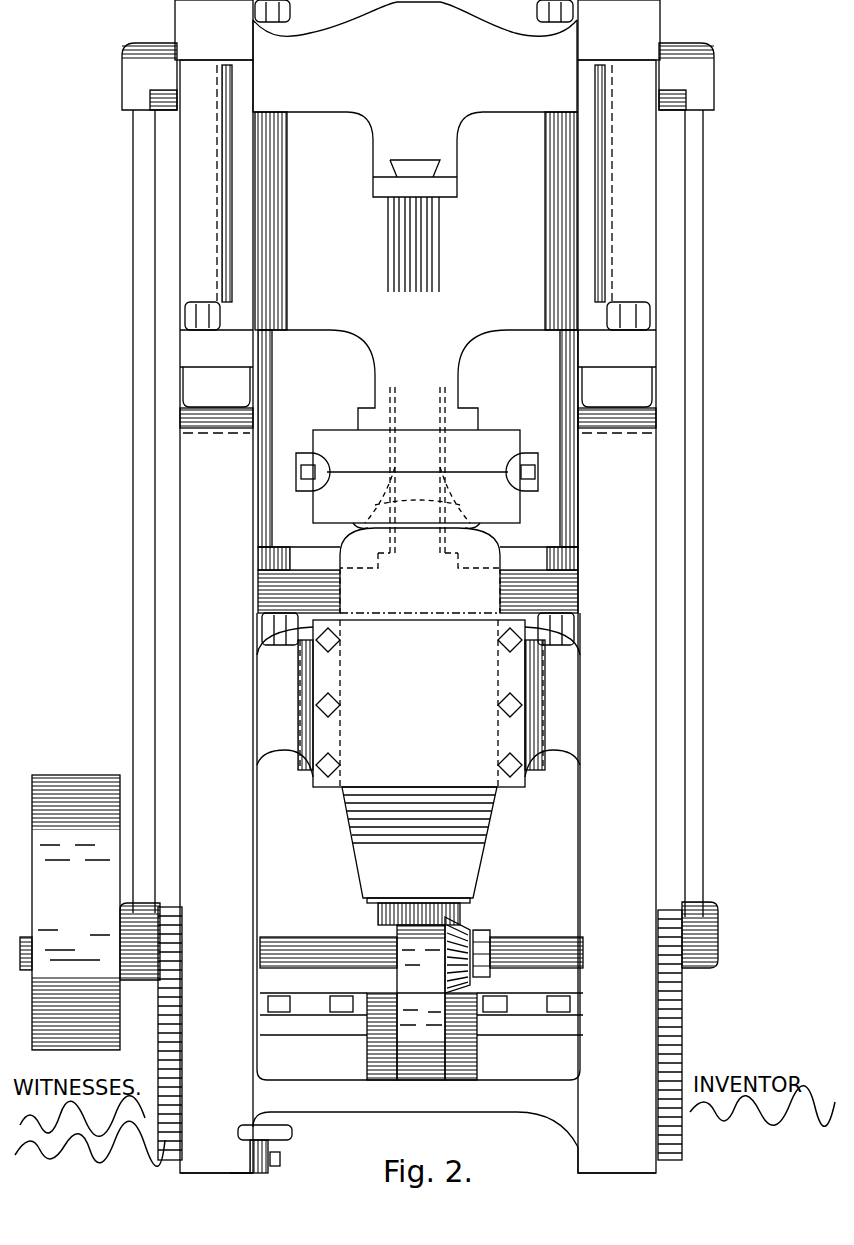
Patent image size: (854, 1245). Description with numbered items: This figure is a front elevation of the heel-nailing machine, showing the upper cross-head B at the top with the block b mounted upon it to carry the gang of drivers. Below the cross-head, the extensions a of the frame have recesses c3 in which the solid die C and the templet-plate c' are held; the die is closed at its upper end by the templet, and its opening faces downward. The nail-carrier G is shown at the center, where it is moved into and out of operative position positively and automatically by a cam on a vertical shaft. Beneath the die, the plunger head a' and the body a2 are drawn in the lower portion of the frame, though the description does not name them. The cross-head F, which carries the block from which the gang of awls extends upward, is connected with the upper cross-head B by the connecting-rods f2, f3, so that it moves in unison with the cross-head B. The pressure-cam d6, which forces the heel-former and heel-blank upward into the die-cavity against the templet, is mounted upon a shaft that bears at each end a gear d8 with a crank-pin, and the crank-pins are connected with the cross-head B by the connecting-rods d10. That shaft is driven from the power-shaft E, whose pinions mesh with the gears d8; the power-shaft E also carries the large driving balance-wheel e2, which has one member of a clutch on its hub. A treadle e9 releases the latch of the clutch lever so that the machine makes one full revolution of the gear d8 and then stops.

The upper cross-head B is at (415, 98).
The block b is at (415, 226).
The connecting-rod f2 is at (288, 236).
The connecting-rod f3 is at (545, 236).
The extensions of the frame a is at (418, 438).
The nail-carrier G is at (411, 389).
The solid die C is at (416, 476).
The templet-plate c' is at (417, 455).
The recesses c3 is at (533, 503).
The plunger head a' is at (420, 568).
The cross-head F is at (418, 580).
The cylinder body a2 is at (418, 846).
The power-shaft E is at (520, 940).
The pressure-cam d6 is at (421, 1002).
The gear d8 is at (682, 1015).
The connecting-rods d10 is at (717, 438).
The driving balance-wheel e2 is at (90, 912).
The treadle e9 is at (290, 1126).